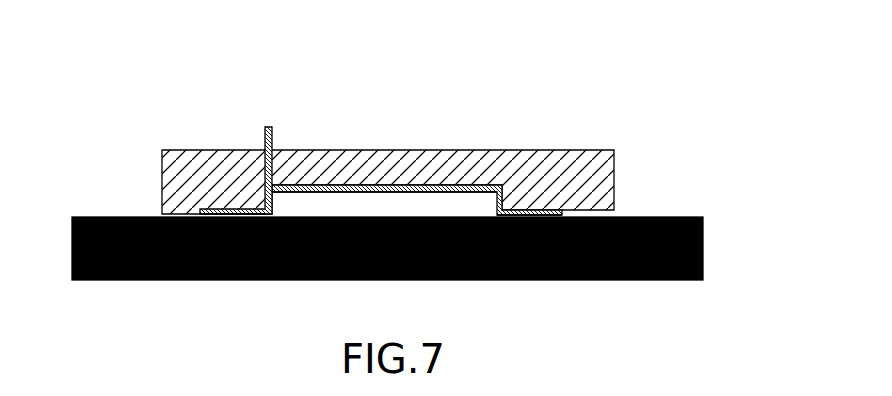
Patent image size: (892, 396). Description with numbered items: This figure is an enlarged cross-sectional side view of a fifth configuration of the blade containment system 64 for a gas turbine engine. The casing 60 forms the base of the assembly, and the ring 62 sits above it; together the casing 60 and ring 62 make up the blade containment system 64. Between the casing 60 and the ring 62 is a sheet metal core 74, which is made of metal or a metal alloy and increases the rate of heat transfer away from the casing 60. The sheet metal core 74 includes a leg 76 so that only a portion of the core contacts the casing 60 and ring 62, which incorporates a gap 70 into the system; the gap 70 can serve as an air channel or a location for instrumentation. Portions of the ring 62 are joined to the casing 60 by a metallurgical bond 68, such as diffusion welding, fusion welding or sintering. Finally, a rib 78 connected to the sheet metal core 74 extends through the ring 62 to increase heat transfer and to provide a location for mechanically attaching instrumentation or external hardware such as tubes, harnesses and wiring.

The casing 60 is at (703, 247).
The ring 62 is at (588, 190).
The blade containment system 64 is at (370, 66).
The metallurgical bond 68 is at (183, 217).
The gap 70 is at (462, 202).
The sheet metal core 74 is at (348, 192).
The leg 76 is at (542, 217).
The rib 78 is at (271, 142).